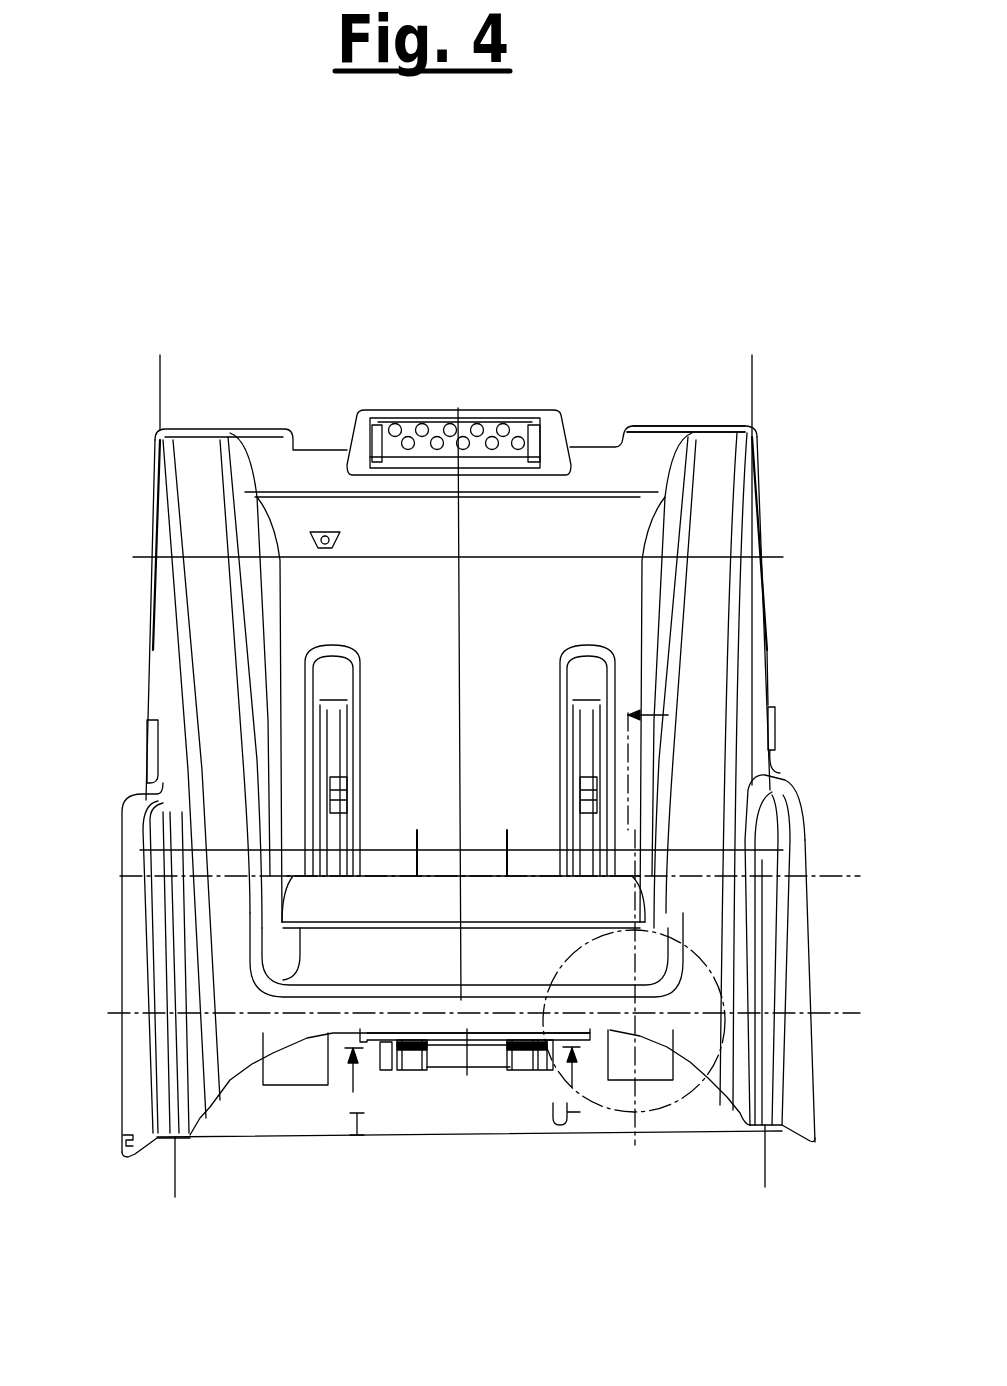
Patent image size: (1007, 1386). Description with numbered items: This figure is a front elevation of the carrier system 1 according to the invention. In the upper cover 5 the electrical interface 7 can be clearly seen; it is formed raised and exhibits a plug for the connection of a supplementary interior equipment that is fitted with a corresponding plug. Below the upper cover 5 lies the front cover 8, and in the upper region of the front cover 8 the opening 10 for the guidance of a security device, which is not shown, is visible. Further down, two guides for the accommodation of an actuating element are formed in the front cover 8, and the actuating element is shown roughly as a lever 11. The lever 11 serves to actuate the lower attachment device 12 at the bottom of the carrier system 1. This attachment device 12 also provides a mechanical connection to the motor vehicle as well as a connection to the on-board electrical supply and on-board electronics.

The carrier system 1 is at (150, 293).
The upper cover 5 is at (645, 452).
The electrical interface 7 is at (505, 413).
The front cover 8 is at (798, 1092).
The opening 10 is at (321, 531).
The lever 11 is at (595, 903).
The attachment device 12 is at (445, 1052).